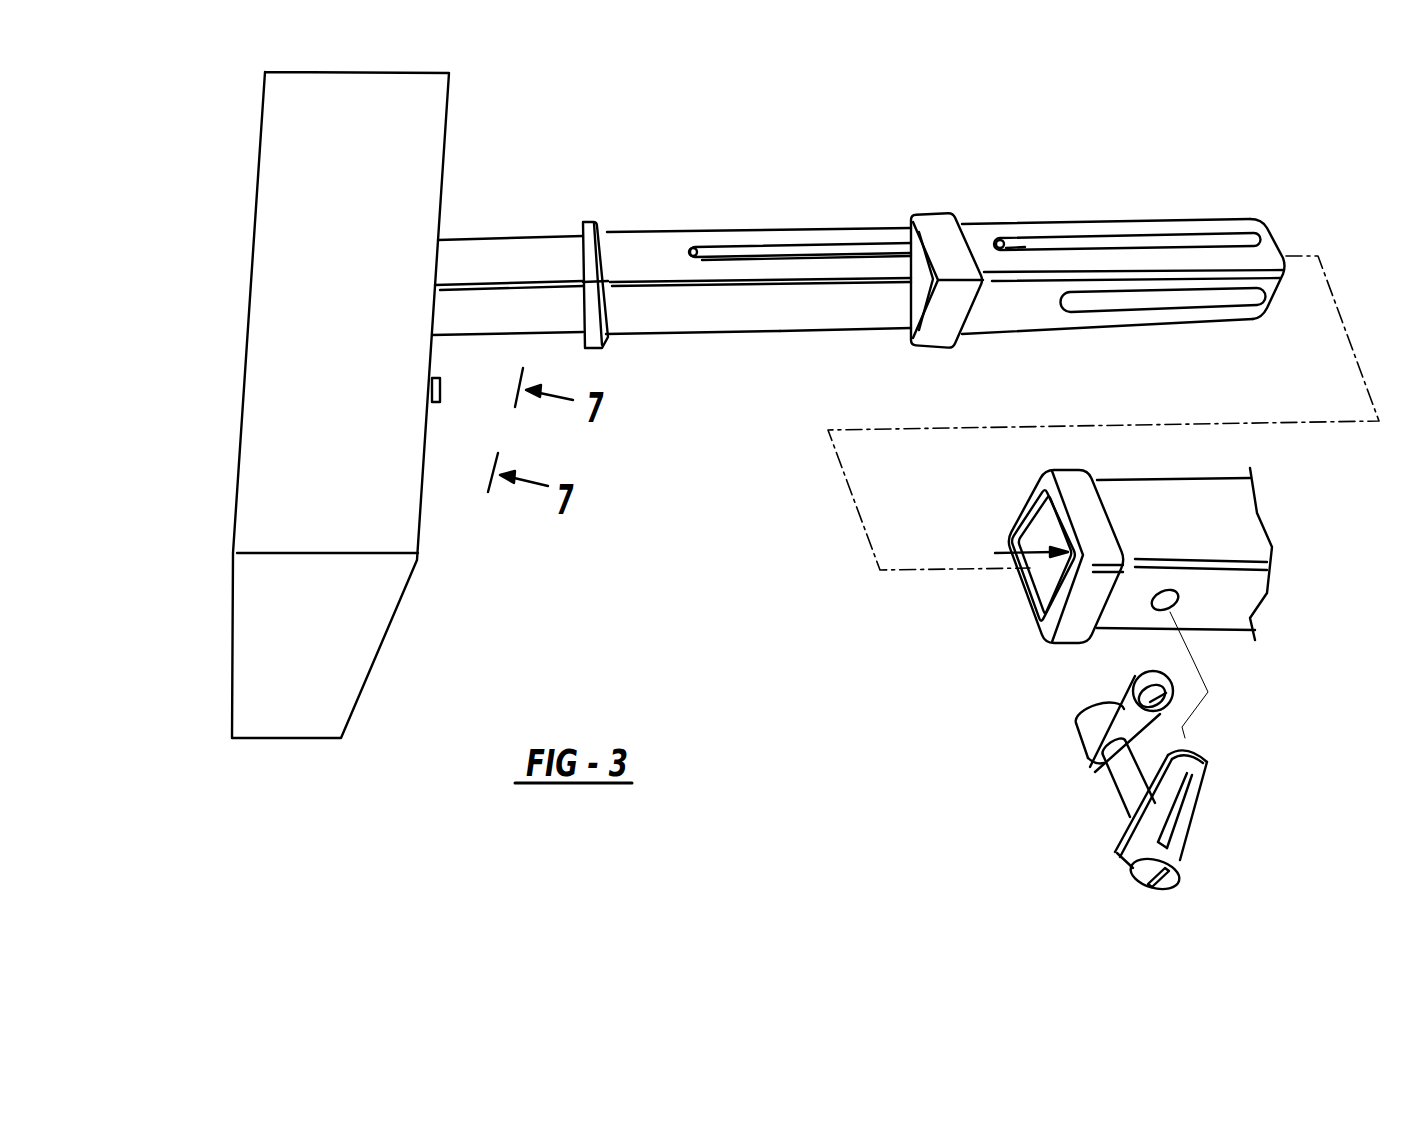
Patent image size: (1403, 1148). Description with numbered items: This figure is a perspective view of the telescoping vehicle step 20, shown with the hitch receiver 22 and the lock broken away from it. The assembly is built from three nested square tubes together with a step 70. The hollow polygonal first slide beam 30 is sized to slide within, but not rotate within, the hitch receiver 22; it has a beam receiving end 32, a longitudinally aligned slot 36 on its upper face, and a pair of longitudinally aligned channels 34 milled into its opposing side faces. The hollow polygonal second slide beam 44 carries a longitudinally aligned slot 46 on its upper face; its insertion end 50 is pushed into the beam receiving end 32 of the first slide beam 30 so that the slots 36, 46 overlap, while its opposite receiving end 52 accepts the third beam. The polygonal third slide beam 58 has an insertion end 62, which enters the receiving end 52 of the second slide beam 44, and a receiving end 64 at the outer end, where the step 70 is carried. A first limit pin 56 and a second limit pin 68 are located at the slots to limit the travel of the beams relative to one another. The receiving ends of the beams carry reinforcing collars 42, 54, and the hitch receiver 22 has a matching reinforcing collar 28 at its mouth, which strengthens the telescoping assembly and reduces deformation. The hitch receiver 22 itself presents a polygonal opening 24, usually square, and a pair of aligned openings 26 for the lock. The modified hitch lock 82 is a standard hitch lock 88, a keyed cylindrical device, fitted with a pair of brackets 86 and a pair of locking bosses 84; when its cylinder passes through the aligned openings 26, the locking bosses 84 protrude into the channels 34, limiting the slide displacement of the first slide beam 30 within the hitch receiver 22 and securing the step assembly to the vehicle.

The telescoping vehicle step 20 is at (1104, 358).
The hitch receiver 22 is at (1213, 480).
The polygonal opening 24 is at (1045, 600).
The pair of aligned openings 26 is at (1175, 595).
The reinforcing collar 28 is at (1060, 470).
The first slide beam 30 is at (985, 222).
The beam receiving end 32 is at (993, 318).
The longitudinally aligned channels 34 is at (1210, 310).
The longitudinally aligned slot 36 is at (1080, 240).
The reinforcing collar 42 is at (932, 210).
The second slide beam 44 is at (753, 335).
The longitudinally aligned slot 46 is at (748, 252).
The insertion end 50 is at (902, 305).
The receiving end 52 is at (650, 328).
The reinforcing collar 54 is at (589, 223).
The first limit pin 56 is at (1001, 241).
The third slide beam 58 is at (503, 238).
The insertion end 62 is at (568, 305).
The receiving end 64 is at (448, 312).
The second limit pin 68 is at (697, 250).
The step 70 is at (233, 524).
The modified hitch lock 82 is at (1212, 802).
The locking bosses 84 is at (1120, 715).
The brackets 86 is at (1130, 823).
The standard hitch lock 88 is at (1123, 783).